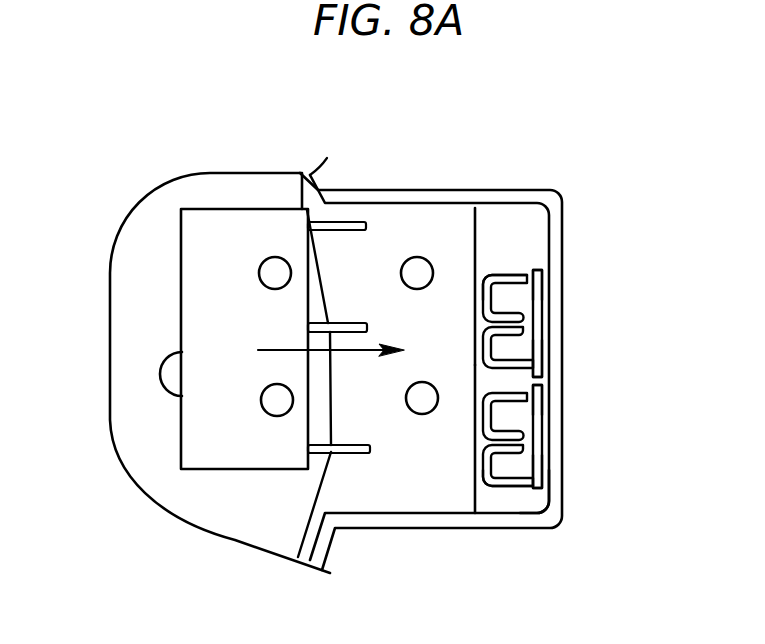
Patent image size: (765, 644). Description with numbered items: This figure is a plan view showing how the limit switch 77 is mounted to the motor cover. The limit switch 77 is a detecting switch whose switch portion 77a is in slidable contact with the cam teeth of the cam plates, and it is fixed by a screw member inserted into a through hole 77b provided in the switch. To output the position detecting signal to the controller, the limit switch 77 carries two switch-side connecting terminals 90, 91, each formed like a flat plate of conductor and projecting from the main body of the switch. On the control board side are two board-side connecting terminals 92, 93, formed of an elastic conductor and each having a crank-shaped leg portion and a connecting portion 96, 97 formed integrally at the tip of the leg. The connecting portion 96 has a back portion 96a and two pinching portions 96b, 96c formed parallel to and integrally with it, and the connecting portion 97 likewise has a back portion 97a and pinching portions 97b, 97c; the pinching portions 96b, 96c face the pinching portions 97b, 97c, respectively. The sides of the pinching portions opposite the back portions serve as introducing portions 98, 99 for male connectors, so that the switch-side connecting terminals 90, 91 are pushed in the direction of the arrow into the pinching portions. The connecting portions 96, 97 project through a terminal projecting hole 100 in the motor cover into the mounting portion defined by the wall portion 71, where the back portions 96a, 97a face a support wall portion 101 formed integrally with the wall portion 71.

The wall portion 71 is at (563, 524).
The limit switch 77 is at (252, 245).
The switch portion 77a is at (168, 373).
The through hole 77b is at (273, 277).
The switch-side connecting terminal 90 is at (347, 452).
The switch-side connecting terminal 91 is at (347, 323).
The board-side connecting terminal 92 is at (517, 487).
The board-side connecting terminal 93 is at (508, 271).
The connecting portion 96 is at (493, 487).
The back portion 96a is at (545, 433).
The pinching portion 96b is at (533, 390).
The pinching portion 96c is at (543, 476).
The connecting portion 97 is at (487, 272).
The back portion 97a is at (543, 315).
The pinching portion 97b is at (535, 268).
The pinching portion 97c is at (533, 350).
The introducing portion 98 is at (476, 438).
The introducing portion 99 is at (475, 322).
The terminal projecting hole 100 is at (530, 217).
The support wall portion 101 is at (557, 483).